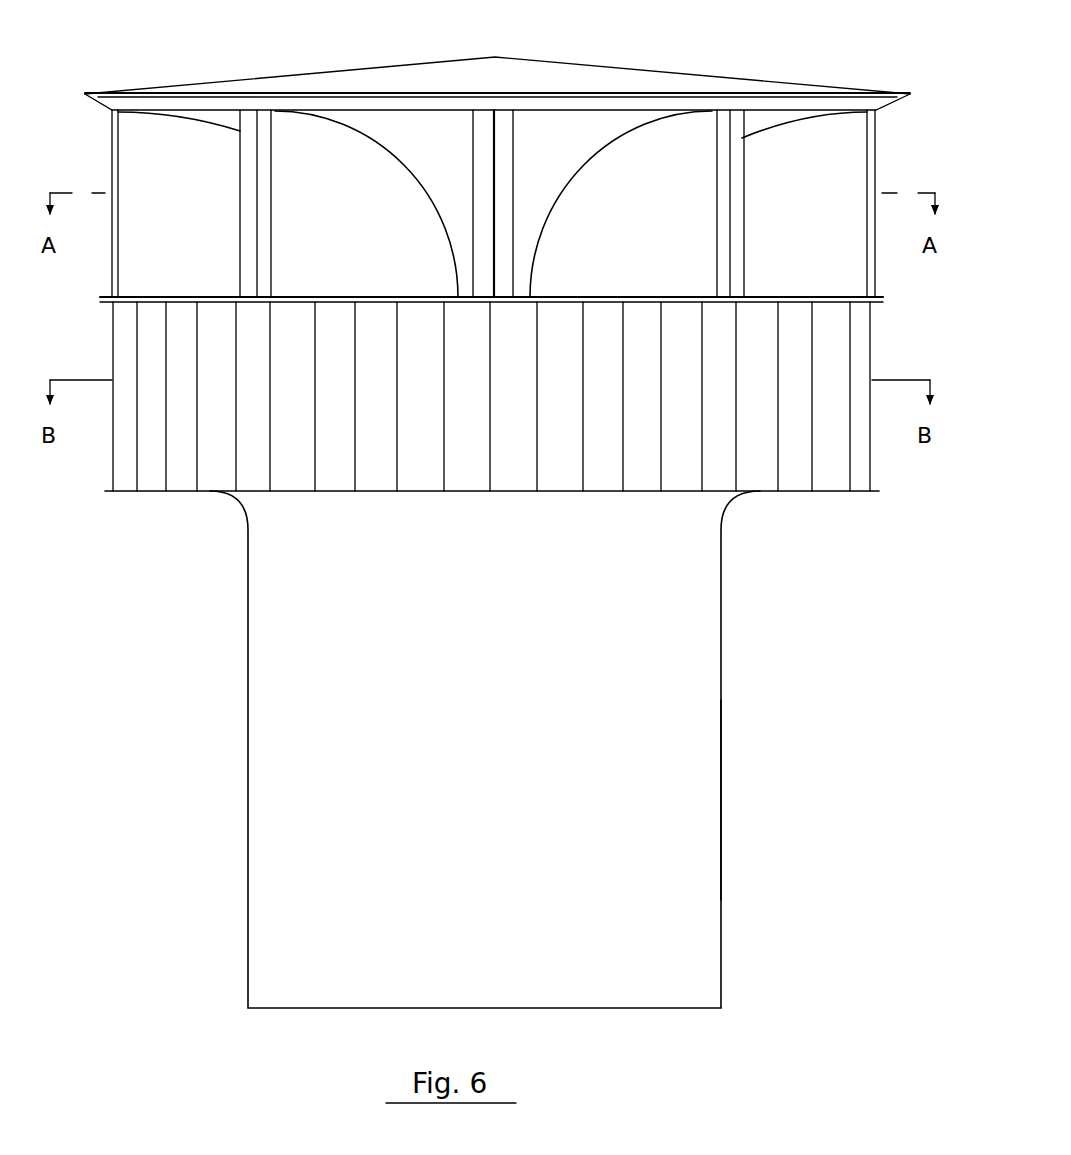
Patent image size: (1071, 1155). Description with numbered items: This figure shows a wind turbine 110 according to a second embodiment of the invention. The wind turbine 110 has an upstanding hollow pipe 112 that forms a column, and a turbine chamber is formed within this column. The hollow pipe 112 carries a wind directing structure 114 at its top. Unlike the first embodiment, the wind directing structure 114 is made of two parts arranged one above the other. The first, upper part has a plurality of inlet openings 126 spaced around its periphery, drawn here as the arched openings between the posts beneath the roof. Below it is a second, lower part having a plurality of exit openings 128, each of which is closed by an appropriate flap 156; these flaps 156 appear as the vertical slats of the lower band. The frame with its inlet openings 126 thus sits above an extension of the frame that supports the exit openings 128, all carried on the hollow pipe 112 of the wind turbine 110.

The wind directing structure 114 is at (100, 78).
The inlet openings 126 is at (344, 225).
The flap 156 is at (357, 463).
The exit openings 128 is at (177, 496).
The wind turbine 110 is at (742, 762).
The hollow pipe 112 is at (722, 834).